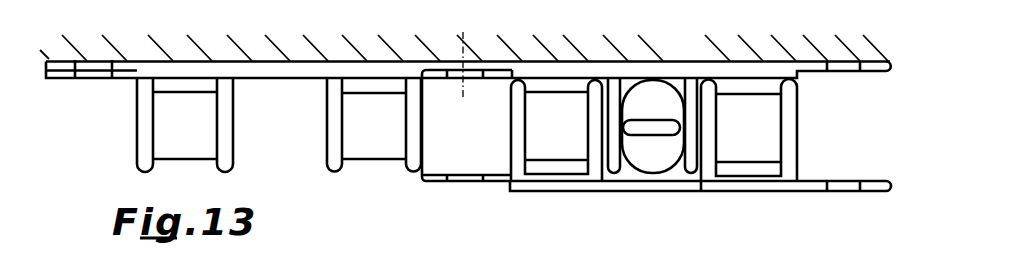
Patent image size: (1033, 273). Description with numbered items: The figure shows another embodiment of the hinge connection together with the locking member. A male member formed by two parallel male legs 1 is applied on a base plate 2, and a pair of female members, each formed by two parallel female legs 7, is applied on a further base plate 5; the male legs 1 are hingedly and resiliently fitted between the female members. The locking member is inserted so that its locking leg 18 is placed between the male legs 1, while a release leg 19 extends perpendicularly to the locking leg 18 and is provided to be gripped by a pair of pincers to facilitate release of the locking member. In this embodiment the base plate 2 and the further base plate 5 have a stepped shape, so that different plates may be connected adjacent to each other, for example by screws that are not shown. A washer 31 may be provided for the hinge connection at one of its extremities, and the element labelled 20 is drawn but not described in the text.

The male legs 1 is at (612, 160).
The base plate 2 is at (708, 66).
The further base plate 5 is at (278, 68).
The female legs 7 is at (695, 200).
The locking leg 18 is at (635, 103).
The release leg 19 is at (645, 125).
The support plate 20 is at (435, 266).
The washer 31 is at (62, 66).